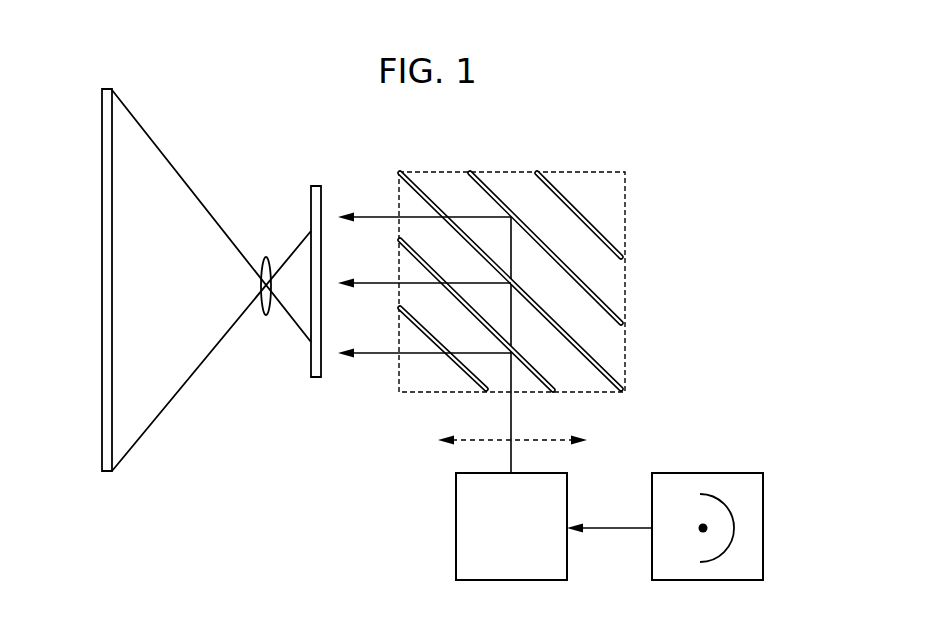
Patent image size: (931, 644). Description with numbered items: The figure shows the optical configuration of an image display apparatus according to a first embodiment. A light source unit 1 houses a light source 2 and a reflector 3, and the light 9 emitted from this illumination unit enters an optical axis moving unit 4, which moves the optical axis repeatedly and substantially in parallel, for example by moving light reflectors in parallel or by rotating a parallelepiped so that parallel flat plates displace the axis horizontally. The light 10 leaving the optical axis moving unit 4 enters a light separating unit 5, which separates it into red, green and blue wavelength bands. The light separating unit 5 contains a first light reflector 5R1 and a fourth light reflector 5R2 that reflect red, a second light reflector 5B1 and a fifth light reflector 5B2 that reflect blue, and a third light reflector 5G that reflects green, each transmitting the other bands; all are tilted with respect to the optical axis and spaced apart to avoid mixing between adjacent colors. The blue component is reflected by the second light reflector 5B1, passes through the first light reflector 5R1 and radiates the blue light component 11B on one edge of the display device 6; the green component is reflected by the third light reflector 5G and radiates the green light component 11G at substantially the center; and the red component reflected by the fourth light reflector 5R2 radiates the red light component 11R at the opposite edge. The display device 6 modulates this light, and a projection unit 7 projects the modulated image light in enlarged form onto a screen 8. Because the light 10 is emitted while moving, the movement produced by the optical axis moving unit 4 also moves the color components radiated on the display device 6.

The light source unit 1 is at (716, 580).
The light source 2 is at (700, 526).
The reflector 3 is at (718, 495).
The optical axis moving unit 4 is at (510, 580).
The light separating unit 5 is at (592, 172).
The second light reflector 5B1 is at (541, 372).
The fifth light reflector 5B2 is at (606, 234).
The first light reflector 5R1 is at (452, 364).
The fourth light reflector 5R2 is at (606, 302).
The third light reflector 5G is at (604, 370).
The display device 6 is at (311, 360).
The projection unit 7 is at (266, 258).
The screen 8 is at (103, 288).
The light 9 is at (617, 529).
The light 10 is at (511, 418).
The red light component 11R is at (367, 217).
The green light component 11G is at (367, 283).
The blue light component 11B is at (367, 353).